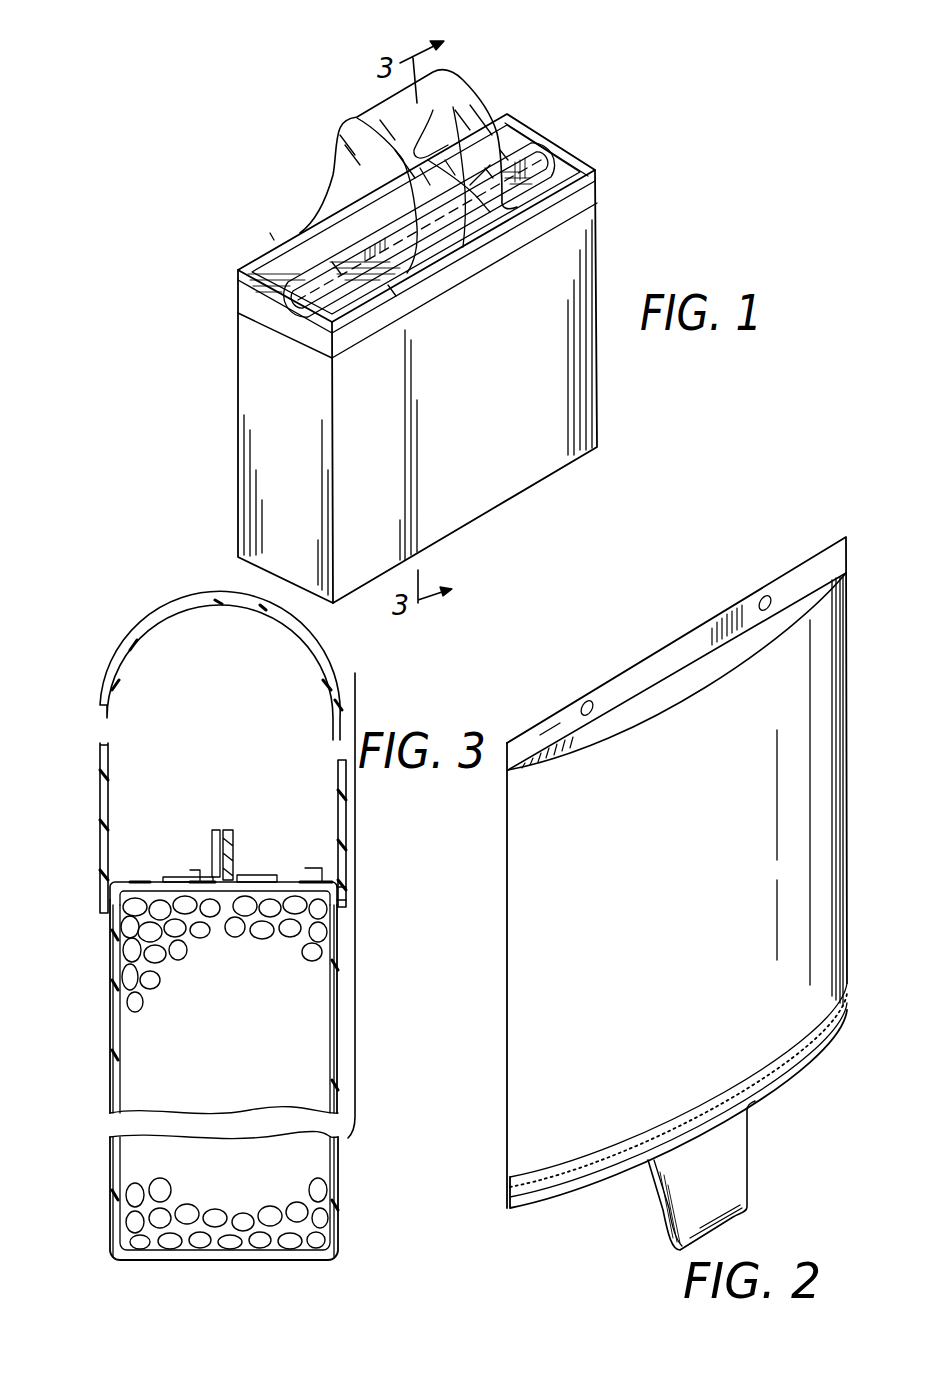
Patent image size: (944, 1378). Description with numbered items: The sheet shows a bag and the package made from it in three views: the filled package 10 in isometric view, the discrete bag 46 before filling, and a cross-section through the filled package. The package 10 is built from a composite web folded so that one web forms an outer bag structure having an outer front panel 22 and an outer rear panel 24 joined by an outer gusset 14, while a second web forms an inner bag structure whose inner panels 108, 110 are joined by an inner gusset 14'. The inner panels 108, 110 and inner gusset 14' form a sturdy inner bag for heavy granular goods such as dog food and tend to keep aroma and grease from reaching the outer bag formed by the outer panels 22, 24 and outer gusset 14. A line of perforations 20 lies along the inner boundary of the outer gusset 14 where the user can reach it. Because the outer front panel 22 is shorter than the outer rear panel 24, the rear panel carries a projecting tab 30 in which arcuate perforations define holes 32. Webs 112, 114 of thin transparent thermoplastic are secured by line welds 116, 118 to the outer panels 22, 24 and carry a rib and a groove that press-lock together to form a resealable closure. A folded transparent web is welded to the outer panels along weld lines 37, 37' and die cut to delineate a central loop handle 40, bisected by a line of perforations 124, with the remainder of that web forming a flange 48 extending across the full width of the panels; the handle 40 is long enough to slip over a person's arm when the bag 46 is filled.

In FIG. 1, the package 10 is at (617, 249).
In FIG. 3, the outer gusset 14 is at (307, 838).
In FIG. 3, the inner gusset 14' is at (177, 826).
In FIG. 1, the line of perforations 20 is at (318, 258).
In FIG. 3, the line of perforations 20 is at (234, 925).
In FIG. 1, the outer front panel 22 is at (494, 407).
In FIG. 2, the outer front panel 22 is at (686, 905).
In FIG. 3, the outer front panel 22 is at (340, 1032).
In FIG. 2, the outer rear panel 24 is at (667, 652).
In FIG. 3, the outer rear panel 24 is at (110, 1018).
In FIG. 2, the tab 30 is at (620, 680).
In FIG. 2, the holes 32 is at (585, 700).
In FIG. 1, the weld line 37 is at (416, 230).
In FIG. 2, the weld line 37 is at (678, 1080).
In FIG. 3, the weld line 37 is at (185, 895).
In FIG. 3, the weld line 37' is at (381, 896).
In FIG. 1, the handle 40 is at (473, 100).
In FIG. 2, the handle 40 is at (732, 1177).
In FIG. 3, the handle 40 is at (183, 617).
In FIG. 2, the bag 46 is at (499, 1008).
In FIG. 3, the flange 48 is at (358, 852).
In FIG. 3, the inner panel 108 is at (335, 968).
In FIG. 2, the inner panel 110 is at (690, 700).
In FIG. 3, the inner panel 110 is at (120, 1070).
In FIG. 3, the web 112 is at (213, 830).
In FIG. 3, the web 114 is at (237, 830).
In FIG. 3, the line weld 116 is at (172, 875).
In FIG. 3, the line weld 118 is at (270, 873).
In FIG. 1, the line of perforations 124 is at (435, 120).